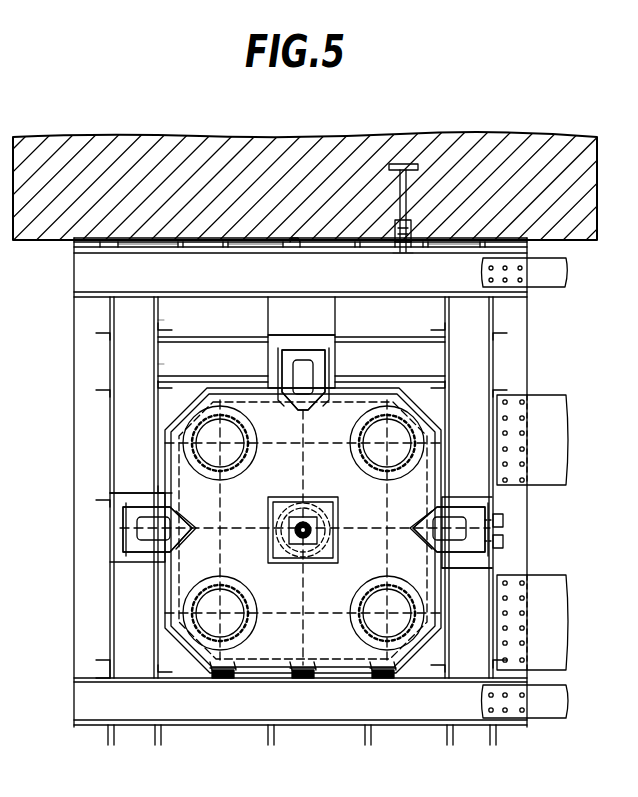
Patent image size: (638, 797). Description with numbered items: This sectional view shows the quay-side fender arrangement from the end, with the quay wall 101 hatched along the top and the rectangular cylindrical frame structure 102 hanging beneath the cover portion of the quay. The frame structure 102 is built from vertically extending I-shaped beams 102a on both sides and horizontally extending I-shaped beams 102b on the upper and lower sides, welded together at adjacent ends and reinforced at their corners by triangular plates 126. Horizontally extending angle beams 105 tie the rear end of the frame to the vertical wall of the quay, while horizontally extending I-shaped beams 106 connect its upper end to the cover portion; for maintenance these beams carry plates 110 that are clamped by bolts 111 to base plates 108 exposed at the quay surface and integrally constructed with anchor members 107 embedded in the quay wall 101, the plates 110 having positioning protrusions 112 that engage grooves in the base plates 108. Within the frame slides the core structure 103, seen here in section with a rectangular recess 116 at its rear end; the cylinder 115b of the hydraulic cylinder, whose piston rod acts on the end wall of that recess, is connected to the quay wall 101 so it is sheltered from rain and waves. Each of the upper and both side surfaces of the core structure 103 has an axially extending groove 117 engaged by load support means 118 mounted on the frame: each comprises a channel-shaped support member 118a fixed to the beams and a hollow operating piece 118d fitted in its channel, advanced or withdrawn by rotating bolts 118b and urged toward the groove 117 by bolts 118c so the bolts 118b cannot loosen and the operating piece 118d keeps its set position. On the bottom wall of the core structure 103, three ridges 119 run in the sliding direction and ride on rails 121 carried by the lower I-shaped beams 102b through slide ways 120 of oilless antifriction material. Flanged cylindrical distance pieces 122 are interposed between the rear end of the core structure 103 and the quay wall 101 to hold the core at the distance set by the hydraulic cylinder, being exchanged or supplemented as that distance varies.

The quay wall 101 is at (204, 150).
The cylindrical frame structure 102 is at (470, 385).
The I-shaped beams 102a is at (122, 445).
The I-shaped beams 102b is at (180, 360).
The core structure 103 is at (303, 530).
The angle beams 105 is at (156, 329).
The I-shaped beams 106 is at (300, 257).
The anchor members 107 is at (420, 175).
The base plates 108 is at (540, 242).
The plates 110 is at (195, 247).
The bolts 111 is at (403, 255).
The positioning protrusions 112 is at (300, 238).
The cylinder 115b is at (296, 528).
The rectangular recess 116 is at (326, 514).
The groove 117 is at (296, 410).
The load support means 118 is at (296, 330).
The channel-shaped support member 118a is at (328, 343).
The bolts 118b is at (506, 518).
The bolts 118c is at (506, 541).
The hollow operating piece 118d is at (288, 366).
The ridges 119 is at (375, 668).
The slide ways 120 is at (232, 682).
The rails 121 is at (218, 682).
The distance pieces 122 is at (244, 455).
The triangular plates 126 is at (452, 652).